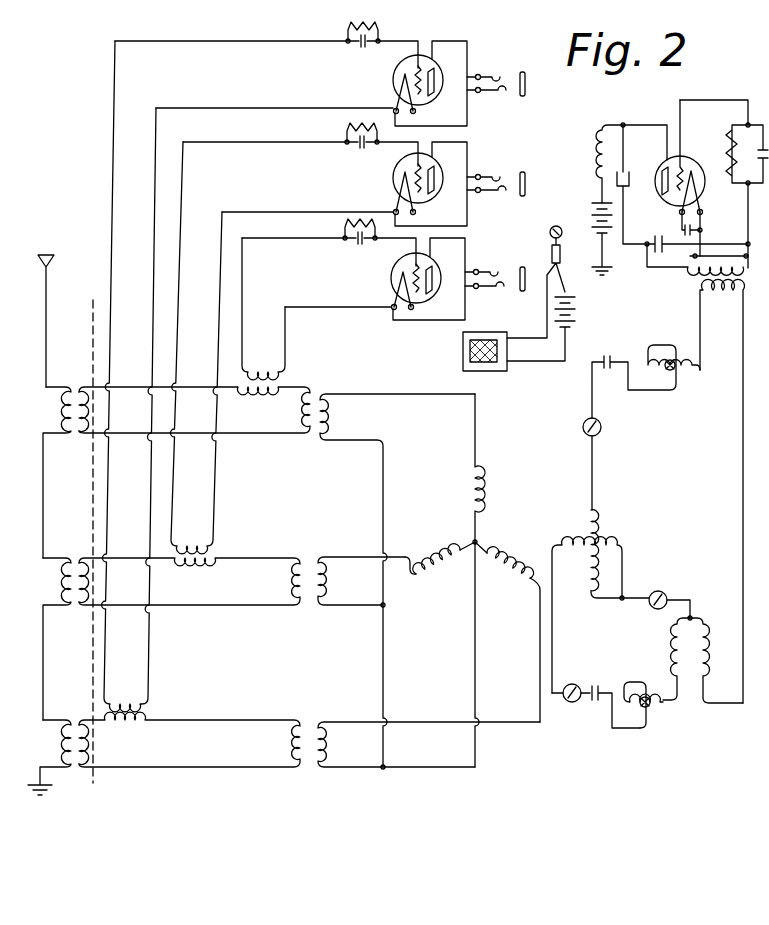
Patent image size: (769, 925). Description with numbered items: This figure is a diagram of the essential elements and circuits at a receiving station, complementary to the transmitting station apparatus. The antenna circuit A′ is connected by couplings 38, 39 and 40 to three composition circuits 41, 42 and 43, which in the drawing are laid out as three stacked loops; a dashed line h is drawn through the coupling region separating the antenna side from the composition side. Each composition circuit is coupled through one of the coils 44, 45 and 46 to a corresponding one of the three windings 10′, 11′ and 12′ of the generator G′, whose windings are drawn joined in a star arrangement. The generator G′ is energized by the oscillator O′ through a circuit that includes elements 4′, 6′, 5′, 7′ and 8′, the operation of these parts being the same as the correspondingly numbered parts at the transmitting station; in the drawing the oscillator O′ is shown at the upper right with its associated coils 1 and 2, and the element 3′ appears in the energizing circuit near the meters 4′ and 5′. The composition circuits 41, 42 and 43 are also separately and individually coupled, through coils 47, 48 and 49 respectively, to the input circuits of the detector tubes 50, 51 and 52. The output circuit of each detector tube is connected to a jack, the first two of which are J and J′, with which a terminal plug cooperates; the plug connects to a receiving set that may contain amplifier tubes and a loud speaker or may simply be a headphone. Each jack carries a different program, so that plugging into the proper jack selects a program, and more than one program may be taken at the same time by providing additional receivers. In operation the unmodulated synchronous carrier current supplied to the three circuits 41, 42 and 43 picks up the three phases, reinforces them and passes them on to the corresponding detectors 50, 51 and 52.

The antenna circuit A′ is at (30, 321).
The dividing line between receiving stations h is at (98, 543).
The coupling 38 is at (66, 461).
The coupling 39 is at (66, 627).
The coupling 40 is at (58, 745).
The composition circuit 41 is at (194, 410).
The composition circuit 42 is at (189, 581).
The composition circuit 43 is at (189, 739).
The coil 44 is at (391, 568).
The coil 45 is at (350, 569).
The coil 46 is at (419, 731).
The coil 47 is at (263, 309).
The coil 48 is at (197, 348).
The coil 49 is at (129, 376).
The detector tube 50 is at (392, 268).
The detector tube 51 is at (398, 178).
The detector tube 52 is at (291, 74).
The jack J is at (495, 266).
The jack J′ is at (496, 171).
The oscillator O′ is at (680, 187).
The primary coil 1 is at (706, 259).
The secondary coil 2 is at (731, 489).
The variometer 3′ is at (600, 601).
The circuit element 4′ is at (602, 464).
The circuit element 5′ is at (618, 646).
The circuit element 6′ is at (646, 372).
The circuit element 7′ is at (688, 659).
The circuit element 8′ is at (647, 708).
The generator G′ is at (474, 580).
The winding 10′ is at (492, 580).
The winding 11′ is at (440, 554).
The winding 12′ is at (507, 624).